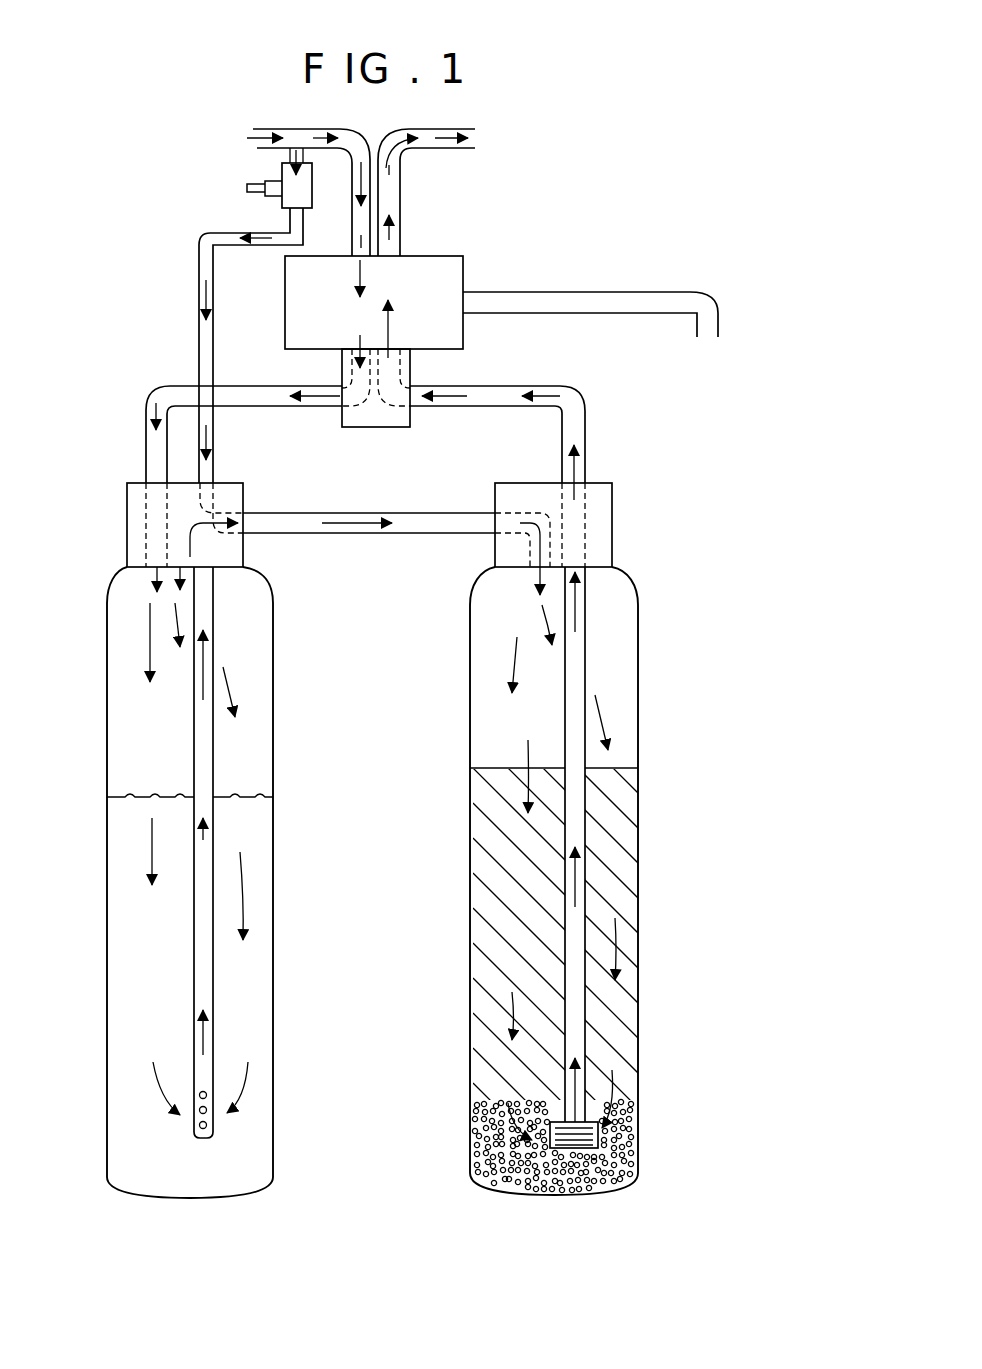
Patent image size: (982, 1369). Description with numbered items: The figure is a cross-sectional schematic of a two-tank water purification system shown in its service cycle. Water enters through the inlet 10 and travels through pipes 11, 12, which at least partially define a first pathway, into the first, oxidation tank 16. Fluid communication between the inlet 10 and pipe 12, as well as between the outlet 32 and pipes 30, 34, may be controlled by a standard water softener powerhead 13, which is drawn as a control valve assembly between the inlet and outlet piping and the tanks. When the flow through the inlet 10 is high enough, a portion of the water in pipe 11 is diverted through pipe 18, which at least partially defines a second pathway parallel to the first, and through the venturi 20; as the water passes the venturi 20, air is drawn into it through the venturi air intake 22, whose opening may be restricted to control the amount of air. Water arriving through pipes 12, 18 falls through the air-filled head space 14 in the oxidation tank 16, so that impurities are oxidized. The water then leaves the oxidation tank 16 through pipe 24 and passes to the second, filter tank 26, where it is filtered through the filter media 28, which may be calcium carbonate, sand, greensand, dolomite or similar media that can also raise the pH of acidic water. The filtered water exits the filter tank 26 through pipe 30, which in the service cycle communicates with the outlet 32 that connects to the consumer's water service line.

The inlet 10 is at (252, 130).
The pipe 11 is at (308, 128).
The pipe 12 is at (148, 405).
The powerhead 13 is at (458, 273).
The head space 14 is at (130, 686).
The oxidation tank 16 is at (105, 605).
The pipe 18 is at (200, 262).
The venturi 20 is at (283, 178).
The venturi air intake 22 is at (255, 192).
The pipe 24 is at (407, 534).
The filter tank 26 is at (470, 703).
The filter media 28 is at (487, 1123).
The pipe 30 is at (497, 392).
The outlet 32 is at (481, 140).
The pipe 34 is at (580, 298).